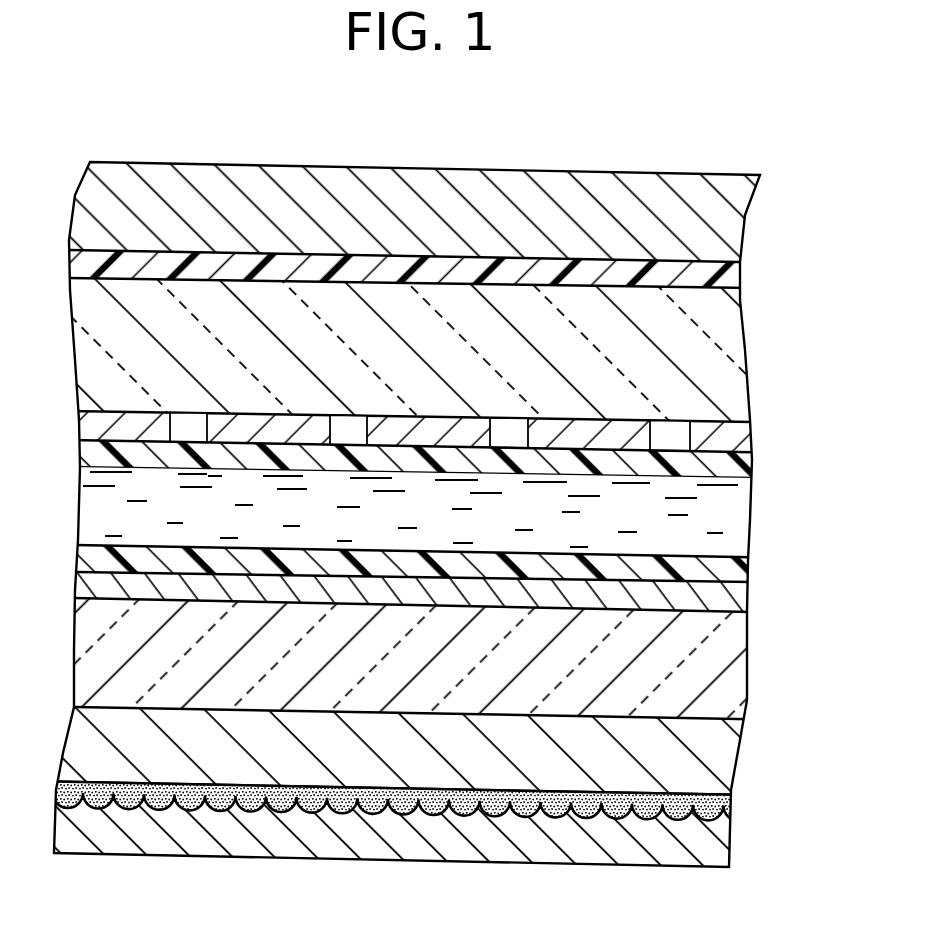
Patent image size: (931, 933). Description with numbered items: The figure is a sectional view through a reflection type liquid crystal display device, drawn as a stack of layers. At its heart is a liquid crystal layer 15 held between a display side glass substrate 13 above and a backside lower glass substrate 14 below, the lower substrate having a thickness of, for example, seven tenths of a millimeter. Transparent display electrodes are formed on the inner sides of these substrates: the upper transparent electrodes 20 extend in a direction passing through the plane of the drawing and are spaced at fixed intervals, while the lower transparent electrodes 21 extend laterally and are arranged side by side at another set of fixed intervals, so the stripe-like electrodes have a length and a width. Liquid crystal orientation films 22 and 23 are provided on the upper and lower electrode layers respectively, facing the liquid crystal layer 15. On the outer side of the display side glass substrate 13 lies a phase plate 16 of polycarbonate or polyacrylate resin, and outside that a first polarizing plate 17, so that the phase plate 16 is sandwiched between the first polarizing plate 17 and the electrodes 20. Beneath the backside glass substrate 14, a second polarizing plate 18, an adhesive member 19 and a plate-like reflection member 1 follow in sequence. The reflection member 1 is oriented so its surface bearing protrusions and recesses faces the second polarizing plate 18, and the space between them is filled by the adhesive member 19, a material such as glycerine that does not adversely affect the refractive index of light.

The reflection member 1 is at (722, 845).
The display side glass substrate 13 is at (698, 352).
The backside lower glass substrate 14 is at (707, 671).
The liquid crystal layer 15 is at (718, 518).
The phase plate 16 is at (707, 277).
The first polarizing plate 17 is at (710, 213).
The second polarizing plate 18 is at (713, 757).
The adhesive member 19 is at (718, 807).
The upper transparent electrodes 20 is at (722, 438).
The lower transparent electrodes 21 is at (720, 601).
The liquid crystal orientation film 22 is at (725, 470).
The liquid crystal orientation film 23 is at (720, 568).